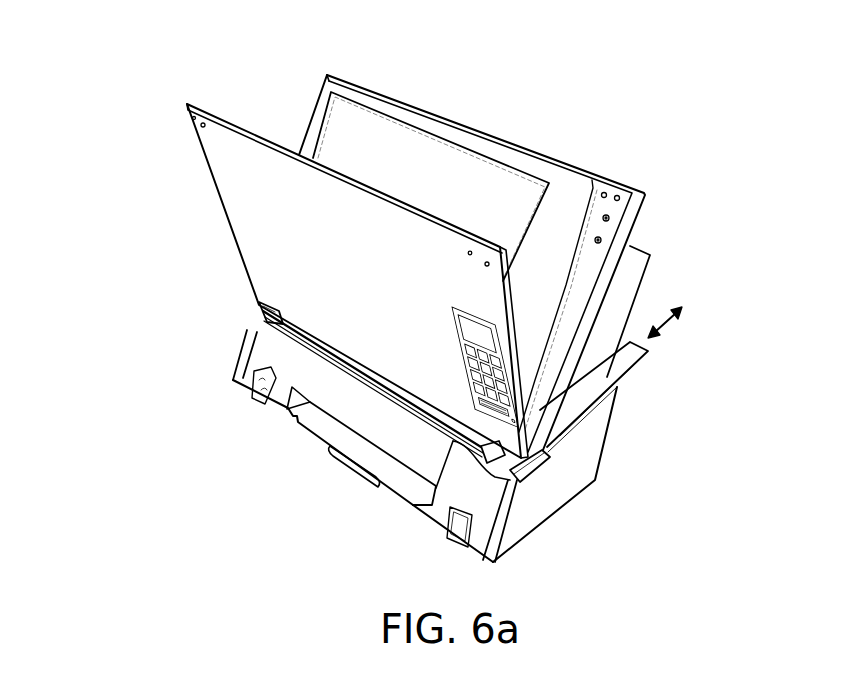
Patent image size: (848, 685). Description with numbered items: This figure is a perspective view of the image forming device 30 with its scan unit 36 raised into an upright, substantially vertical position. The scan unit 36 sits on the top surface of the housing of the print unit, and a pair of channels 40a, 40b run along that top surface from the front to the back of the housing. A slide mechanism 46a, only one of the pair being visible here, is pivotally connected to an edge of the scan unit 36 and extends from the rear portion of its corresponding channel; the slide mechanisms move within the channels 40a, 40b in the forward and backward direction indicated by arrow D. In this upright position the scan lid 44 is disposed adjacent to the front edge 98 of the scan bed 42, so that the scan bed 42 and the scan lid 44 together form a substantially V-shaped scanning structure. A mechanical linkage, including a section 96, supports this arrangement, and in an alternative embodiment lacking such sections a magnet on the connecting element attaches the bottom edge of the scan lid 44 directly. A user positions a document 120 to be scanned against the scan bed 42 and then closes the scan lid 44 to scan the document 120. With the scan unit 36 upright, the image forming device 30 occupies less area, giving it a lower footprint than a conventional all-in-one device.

The image forming device 30 is at (541, 53).
The scan unit 36 is at (128, 177).
The scan bed 42 is at (563, 165).
The scan lid 44 is at (226, 216).
The channel 40a is at (455, 442).
The channel 40b is at (261, 307).
The slide mechanism 46a is at (648, 352).
The section of mechanical linkage 96 is at (603, 239).
The front edge of scan bed 98 is at (547, 477).
The document 120 is at (325, 112).
The arrow indicating forward and backward direction D is at (665, 325).